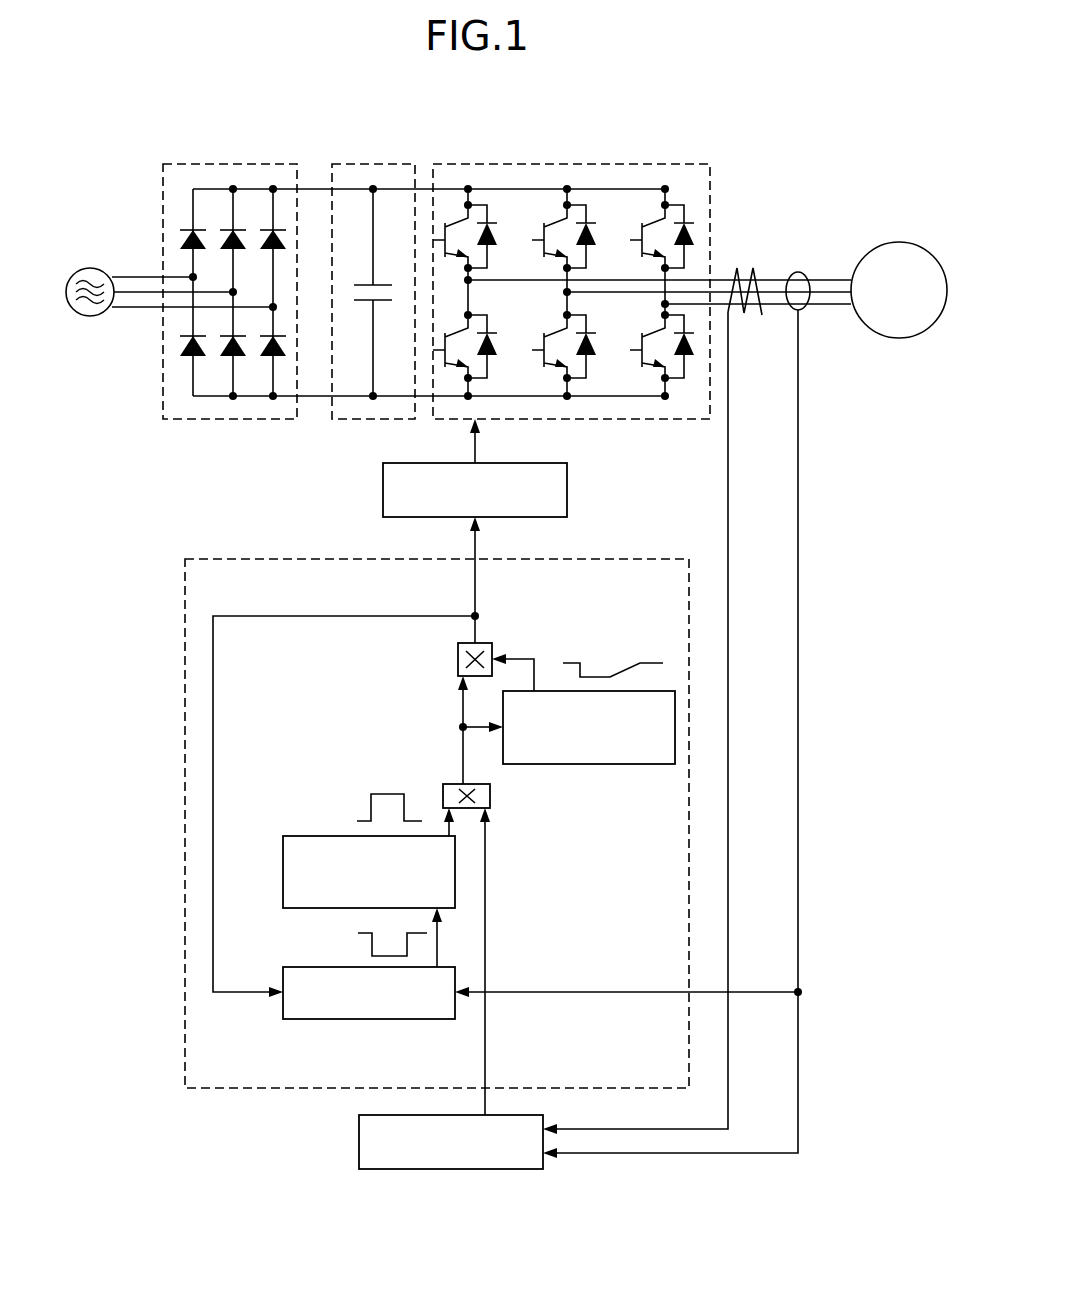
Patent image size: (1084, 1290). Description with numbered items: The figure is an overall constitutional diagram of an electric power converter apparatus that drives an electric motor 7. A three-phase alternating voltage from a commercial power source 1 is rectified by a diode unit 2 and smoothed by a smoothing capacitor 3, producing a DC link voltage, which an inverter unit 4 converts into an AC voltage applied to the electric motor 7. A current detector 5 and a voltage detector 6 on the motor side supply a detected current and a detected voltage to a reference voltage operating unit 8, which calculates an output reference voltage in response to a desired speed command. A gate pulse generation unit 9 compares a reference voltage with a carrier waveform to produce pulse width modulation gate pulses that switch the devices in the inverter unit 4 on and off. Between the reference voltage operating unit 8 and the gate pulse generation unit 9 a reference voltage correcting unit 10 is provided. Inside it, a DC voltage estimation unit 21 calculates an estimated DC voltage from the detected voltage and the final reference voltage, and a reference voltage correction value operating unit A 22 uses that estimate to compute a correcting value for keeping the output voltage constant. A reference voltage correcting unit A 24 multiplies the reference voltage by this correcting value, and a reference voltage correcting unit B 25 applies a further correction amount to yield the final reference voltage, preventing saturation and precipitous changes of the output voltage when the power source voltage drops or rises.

The commercial power source 1 is at (90, 268).
The diode unit 2 is at (230, 164).
The smoothing capacitor 3 is at (375, 164).
The inverter unit 4 is at (571, 164).
The current detector 5 is at (748, 268).
The voltage detector 6 is at (798, 272).
The electric motor 7 is at (898, 242).
The reference voltage operating unit 8 is at (359, 1140).
The gate pulse generation unit 9 is at (383, 487).
The reference voltage correcting unit 10 is at (185, 800).
The DC voltage estimation unit 21 is at (283, 1010).
The reference voltage correction value operating unit A 22 is at (283, 880).
The reference voltage correcting unit A 24 is at (490, 796).
The reference voltage correcting unit B 25 is at (458, 657).